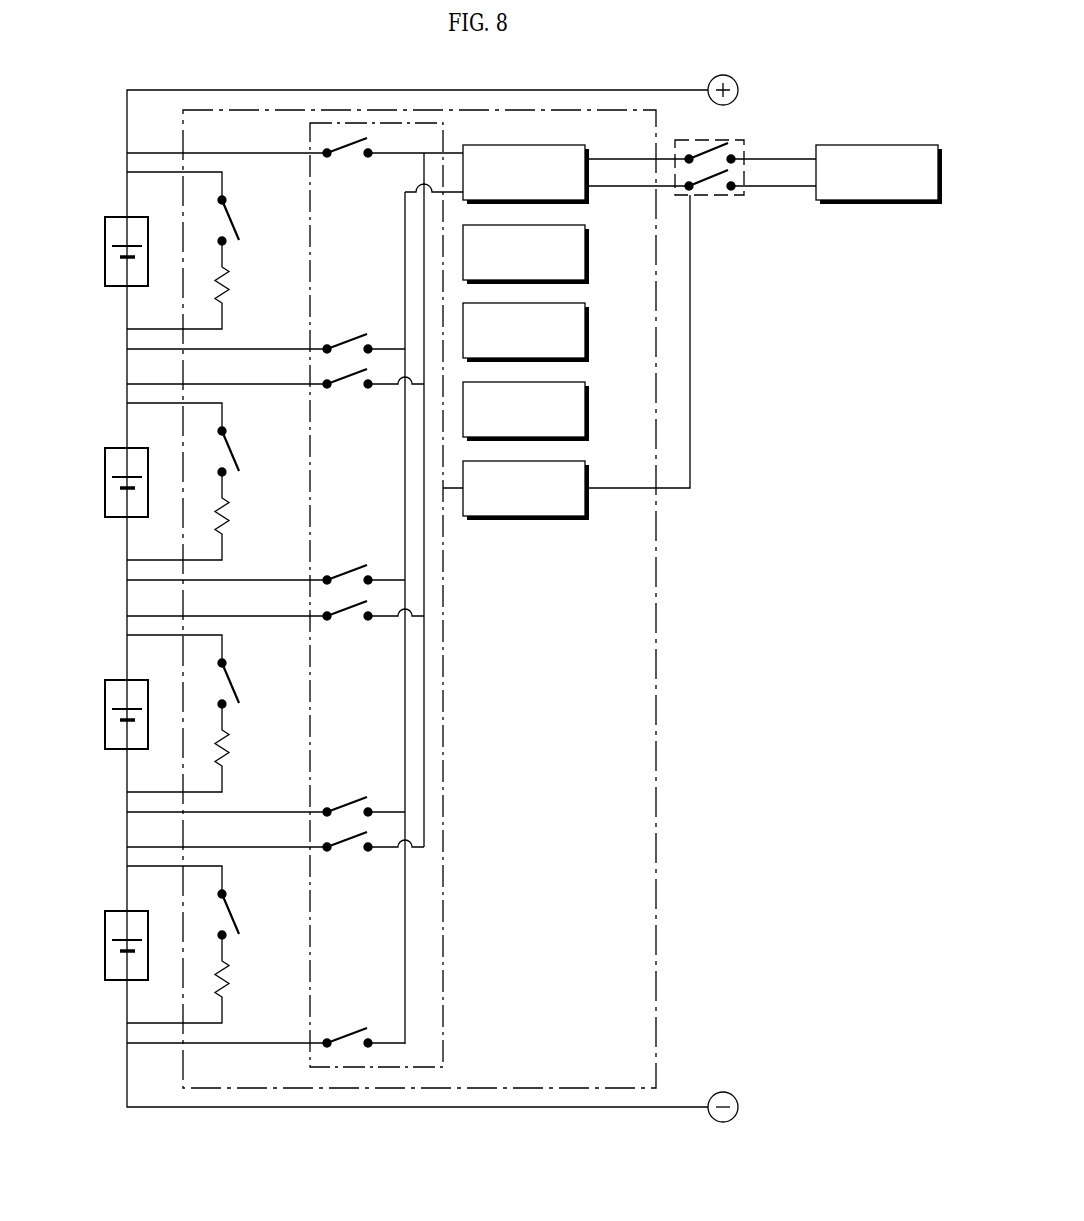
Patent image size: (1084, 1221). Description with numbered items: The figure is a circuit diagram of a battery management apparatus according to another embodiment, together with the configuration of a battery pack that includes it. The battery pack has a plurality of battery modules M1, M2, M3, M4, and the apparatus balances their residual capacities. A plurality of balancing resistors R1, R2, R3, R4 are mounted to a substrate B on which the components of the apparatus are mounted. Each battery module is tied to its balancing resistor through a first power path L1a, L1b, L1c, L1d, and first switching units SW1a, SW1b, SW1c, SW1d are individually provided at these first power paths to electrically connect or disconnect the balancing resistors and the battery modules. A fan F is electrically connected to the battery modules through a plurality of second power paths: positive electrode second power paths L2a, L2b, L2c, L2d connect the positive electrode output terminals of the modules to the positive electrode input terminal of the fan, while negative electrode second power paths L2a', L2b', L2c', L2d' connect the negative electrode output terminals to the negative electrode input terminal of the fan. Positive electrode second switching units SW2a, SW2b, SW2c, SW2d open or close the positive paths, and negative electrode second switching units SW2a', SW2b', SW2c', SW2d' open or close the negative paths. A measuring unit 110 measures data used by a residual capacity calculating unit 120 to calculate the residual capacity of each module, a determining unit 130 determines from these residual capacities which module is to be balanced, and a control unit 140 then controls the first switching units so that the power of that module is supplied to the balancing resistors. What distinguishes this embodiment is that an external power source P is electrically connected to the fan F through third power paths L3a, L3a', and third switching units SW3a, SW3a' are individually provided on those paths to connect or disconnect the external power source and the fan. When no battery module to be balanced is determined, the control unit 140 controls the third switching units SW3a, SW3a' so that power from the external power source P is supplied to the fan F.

The substrate B is at (657, 599).
The fan F is at (588, 153).
The external power source P is at (912, 145).
The measuring unit 110 is at (589, 253).
The residual capacity calculating unit 120 is at (589, 331).
The determining unit 130 is at (589, 410).
The control unit 140 is at (589, 479).
The battery module M1 is at (105, 250).
The battery module M2 is at (105, 481).
The battery module M3 is at (105, 713).
The battery module M4 is at (105, 944).
The balancing resistor R1 is at (229, 285).
The balancing resistor R2 is at (229, 516).
The balancing resistor R3 is at (229, 748).
The balancing resistor R4 is at (229, 979).
The first switching unit SW1a is at (232, 221).
The first switching unit SW1b is at (232, 452).
The first switching unit SW1c is at (232, 684).
The first switching unit SW1d is at (232, 915).
The positive electrode second switching unit SW2a is at (347, 160).
The negative electrode second switching unit SW2a' is at (351, 326).
The positive electrode second switching unit SW2b is at (347, 391).
The negative electrode second switching unit SW2b' is at (351, 557).
The positive electrode second switching unit SW2c is at (347, 623).
The negative electrode second switching unit SW2c' is at (351, 789).
The positive electrode second switching unit SW2d is at (347, 854).
The negative electrode second switching unit SW2d' is at (351, 1020).
The third switching unit SW3a is at (709, 152).
The third switching unit SW3a' is at (717, 202).
The first power path L1a is at (137, 172).
The first power path L1b is at (137, 403).
The first power path L1c is at (137, 635).
The first power path L1d is at (137, 866).
The positive electrode second power path L2a is at (263, 145).
The negative electrode second power path L2a' is at (231, 340).
The positive electrode second power path L2b is at (243, 376).
The negative electrode second power path L2b' is at (231, 571).
The positive electrode second power path L2c is at (243, 608).
The negative electrode second power path L2c' is at (231, 803).
The positive electrode second power path L2d is at (243, 839).
The negative electrode second power path L2d' is at (231, 1034).
The third power path L3a is at (702, 140).
The third power path L3a' is at (702, 209).